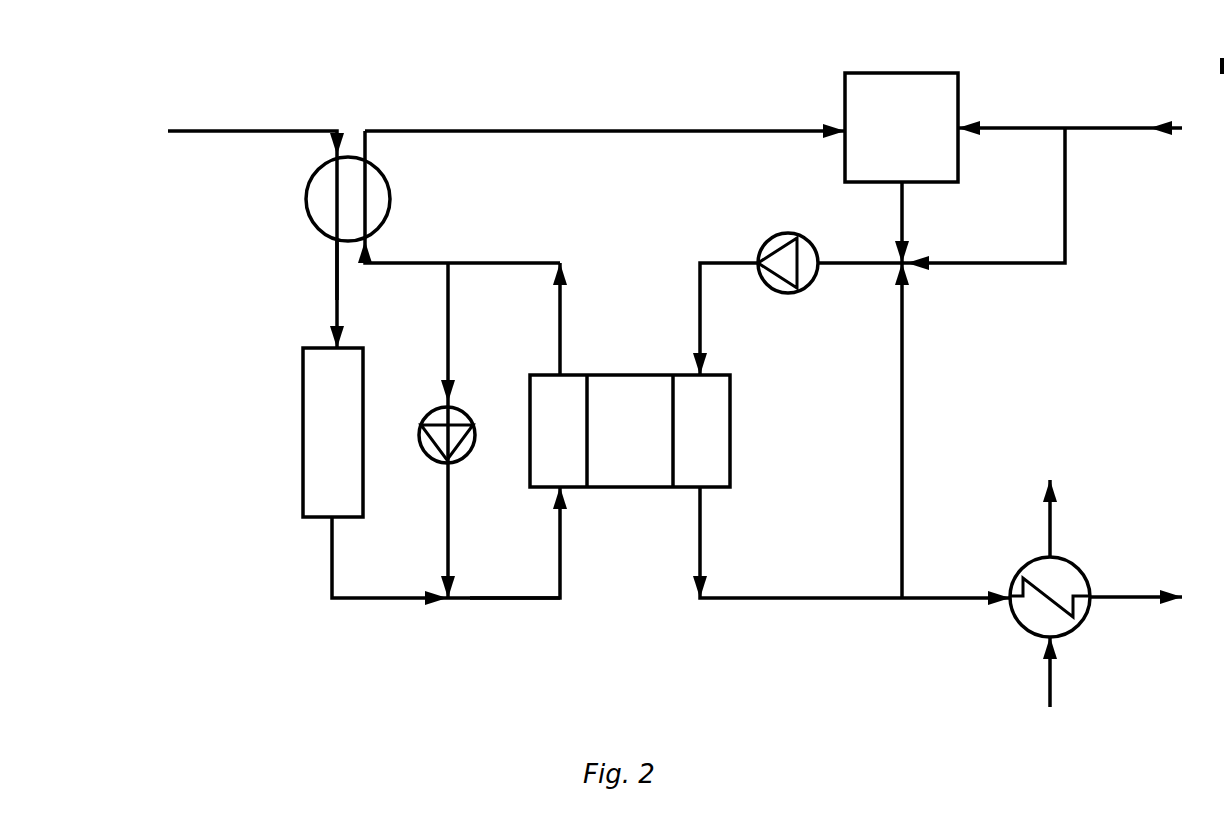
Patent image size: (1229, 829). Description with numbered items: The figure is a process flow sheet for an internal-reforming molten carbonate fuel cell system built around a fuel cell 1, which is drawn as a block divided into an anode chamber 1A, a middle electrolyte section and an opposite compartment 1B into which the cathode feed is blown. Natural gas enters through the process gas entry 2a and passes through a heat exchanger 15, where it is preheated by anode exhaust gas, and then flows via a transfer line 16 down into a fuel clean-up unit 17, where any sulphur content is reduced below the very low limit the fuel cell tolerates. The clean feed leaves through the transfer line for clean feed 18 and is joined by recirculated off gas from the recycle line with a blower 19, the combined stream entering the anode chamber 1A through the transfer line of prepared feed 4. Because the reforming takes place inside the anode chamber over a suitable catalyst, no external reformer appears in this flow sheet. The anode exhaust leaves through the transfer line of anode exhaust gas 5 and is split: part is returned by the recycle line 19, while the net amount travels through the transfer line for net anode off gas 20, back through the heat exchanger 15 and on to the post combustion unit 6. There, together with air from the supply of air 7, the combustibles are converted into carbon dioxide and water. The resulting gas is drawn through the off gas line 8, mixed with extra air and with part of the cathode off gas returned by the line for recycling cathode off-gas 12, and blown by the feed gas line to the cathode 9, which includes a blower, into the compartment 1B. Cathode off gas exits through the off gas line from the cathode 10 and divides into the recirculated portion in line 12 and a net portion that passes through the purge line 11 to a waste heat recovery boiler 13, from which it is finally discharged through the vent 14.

The fuel cell 1 is at (630, 457).
The anode 1A is at (568, 452).
The second compartment 1B is at (711, 452).
The process gas entry 2a is at (266, 133).
The transfer line of prepared feed 4 is at (505, 600).
The transfer line of anode exhaust gas 5 is at (571, 320).
The post combustion unit 6 is at (905, 156).
The supply of air 7 is at (1104, 126).
The off gas line 8 is at (906, 225).
The feed gas line to the cathode 9 is at (702, 330).
The off gas line from the cathode 10 is at (818, 580).
The purge line 11 is at (956, 600).
The line for recycling cathode off-gas 12 is at (905, 436).
The waste heat recovery boiler 13 is at (1054, 536).
The vent 14 is at (1140, 592).
The heat exchanger 15 is at (305, 214).
The transfer line 16 is at (335, 298).
The fuel clean-up unit 17 is at (303, 437).
The transfer line for clean feed 18 is at (332, 567).
The recycle line with a blower 19 is at (452, 340).
The transfer line for net anode off gas 20 is at (414, 262).